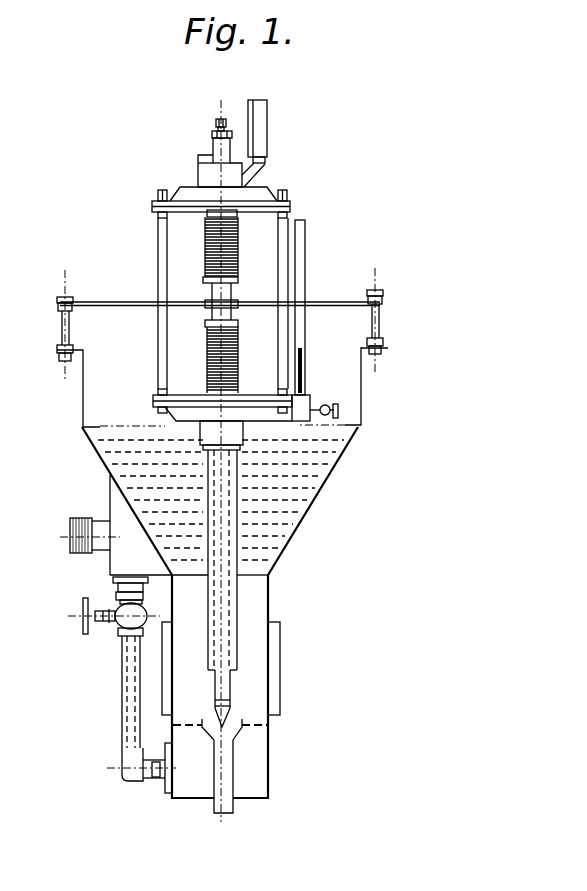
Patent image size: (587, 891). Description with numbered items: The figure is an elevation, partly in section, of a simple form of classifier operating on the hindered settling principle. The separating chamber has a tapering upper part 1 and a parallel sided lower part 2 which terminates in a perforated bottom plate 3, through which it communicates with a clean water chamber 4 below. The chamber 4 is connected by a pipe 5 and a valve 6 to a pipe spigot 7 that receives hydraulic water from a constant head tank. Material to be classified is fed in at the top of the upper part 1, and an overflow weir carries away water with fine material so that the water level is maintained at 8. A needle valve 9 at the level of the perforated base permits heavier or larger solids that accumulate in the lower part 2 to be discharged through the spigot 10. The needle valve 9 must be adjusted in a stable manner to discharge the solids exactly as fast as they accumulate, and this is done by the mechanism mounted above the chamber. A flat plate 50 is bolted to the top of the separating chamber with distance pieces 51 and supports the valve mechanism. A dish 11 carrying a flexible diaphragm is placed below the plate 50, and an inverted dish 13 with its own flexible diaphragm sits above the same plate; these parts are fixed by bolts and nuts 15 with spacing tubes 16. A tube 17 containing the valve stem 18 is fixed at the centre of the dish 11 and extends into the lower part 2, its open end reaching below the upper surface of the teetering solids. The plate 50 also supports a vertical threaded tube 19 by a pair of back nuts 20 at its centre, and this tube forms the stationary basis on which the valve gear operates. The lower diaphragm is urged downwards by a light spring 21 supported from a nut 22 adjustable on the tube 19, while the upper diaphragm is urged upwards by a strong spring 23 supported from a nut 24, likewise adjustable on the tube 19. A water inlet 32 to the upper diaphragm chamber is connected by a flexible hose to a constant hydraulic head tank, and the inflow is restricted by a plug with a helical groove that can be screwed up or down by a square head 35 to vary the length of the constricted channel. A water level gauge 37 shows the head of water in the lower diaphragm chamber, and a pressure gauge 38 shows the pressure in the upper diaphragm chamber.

The tapering upper part 1 is at (307, 512).
The parallel sided lower part 2 is at (265, 607).
The perforated bottom plate 3 is at (250, 727).
The clean water chamber 4 is at (262, 784).
The pipe 5 is at (122, 710).
The valve 6 is at (116, 625).
The pipe spigot 7 is at (99, 548).
The water level 8 is at (83, 425).
The needle valve 9 is at (228, 722).
The spigot 10 is at (215, 800).
The dish 11 is at (163, 413).
The inverted dish 13 is at (259, 193).
The bolts and nuts 15 is at (152, 205).
The spacing tubes 16 is at (158, 263).
The tube 17 is at (237, 645).
The valve stem 18 is at (230, 688).
The vertical threaded tube 19 is at (234, 290).
The back nuts 20 is at (207, 308).
The light spring 21 is at (206, 357).
The nut 22 is at (236, 331).
The strong spring 23 is at (205, 246).
The nut 24 is at (237, 280).
The water inlet 32 is at (200, 158).
The square head 35 is at (215, 126).
The water level gauge 37 is at (306, 293).
The pressure gauge 38 is at (266, 141).
The flat plate 50 is at (132, 296).
The distance pieces 51 is at (59, 340).